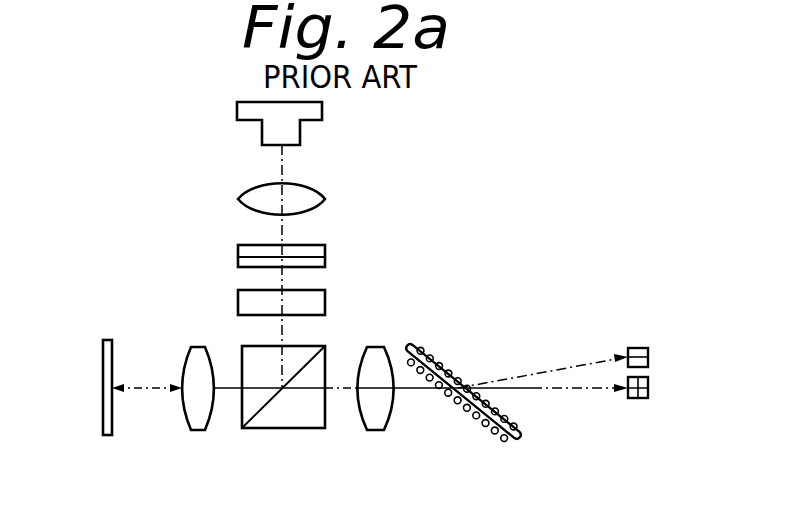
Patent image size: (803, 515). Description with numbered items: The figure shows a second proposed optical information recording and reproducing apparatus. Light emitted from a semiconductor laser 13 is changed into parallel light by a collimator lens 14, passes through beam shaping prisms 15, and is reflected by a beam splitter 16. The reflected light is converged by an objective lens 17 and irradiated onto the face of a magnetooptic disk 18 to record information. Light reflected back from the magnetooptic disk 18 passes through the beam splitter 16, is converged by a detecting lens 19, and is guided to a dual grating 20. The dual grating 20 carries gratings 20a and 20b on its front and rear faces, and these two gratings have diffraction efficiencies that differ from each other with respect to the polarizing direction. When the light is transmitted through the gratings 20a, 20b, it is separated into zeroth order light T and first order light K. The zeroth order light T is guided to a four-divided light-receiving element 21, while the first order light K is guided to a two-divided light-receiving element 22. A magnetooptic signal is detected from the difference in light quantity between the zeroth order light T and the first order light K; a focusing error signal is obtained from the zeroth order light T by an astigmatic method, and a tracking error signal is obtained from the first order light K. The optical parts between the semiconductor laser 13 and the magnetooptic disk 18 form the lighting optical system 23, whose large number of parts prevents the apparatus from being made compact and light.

The semiconductor laser 13 is at (322, 112).
The collimator lens 14 is at (325, 199).
The beam shaping prisms 15 is at (325, 296).
The beam splitter 16 is at (246, 358).
The objective lens 17 is at (187, 352).
The magnetooptic disk 18 is at (103, 341).
The detecting lens 19 is at (370, 347).
The dual grating 20 is at (516, 436).
The grating 20a is at (455, 397).
The grating 20b is at (443, 366).
The four-divided light-receiving element 21 is at (640, 398).
The two-divided light-receiving element 22 is at (640, 348).
The lighting optical system 23 is at (212, 200).
The first order light K is at (565, 364).
The zeroth order light T is at (572, 392).